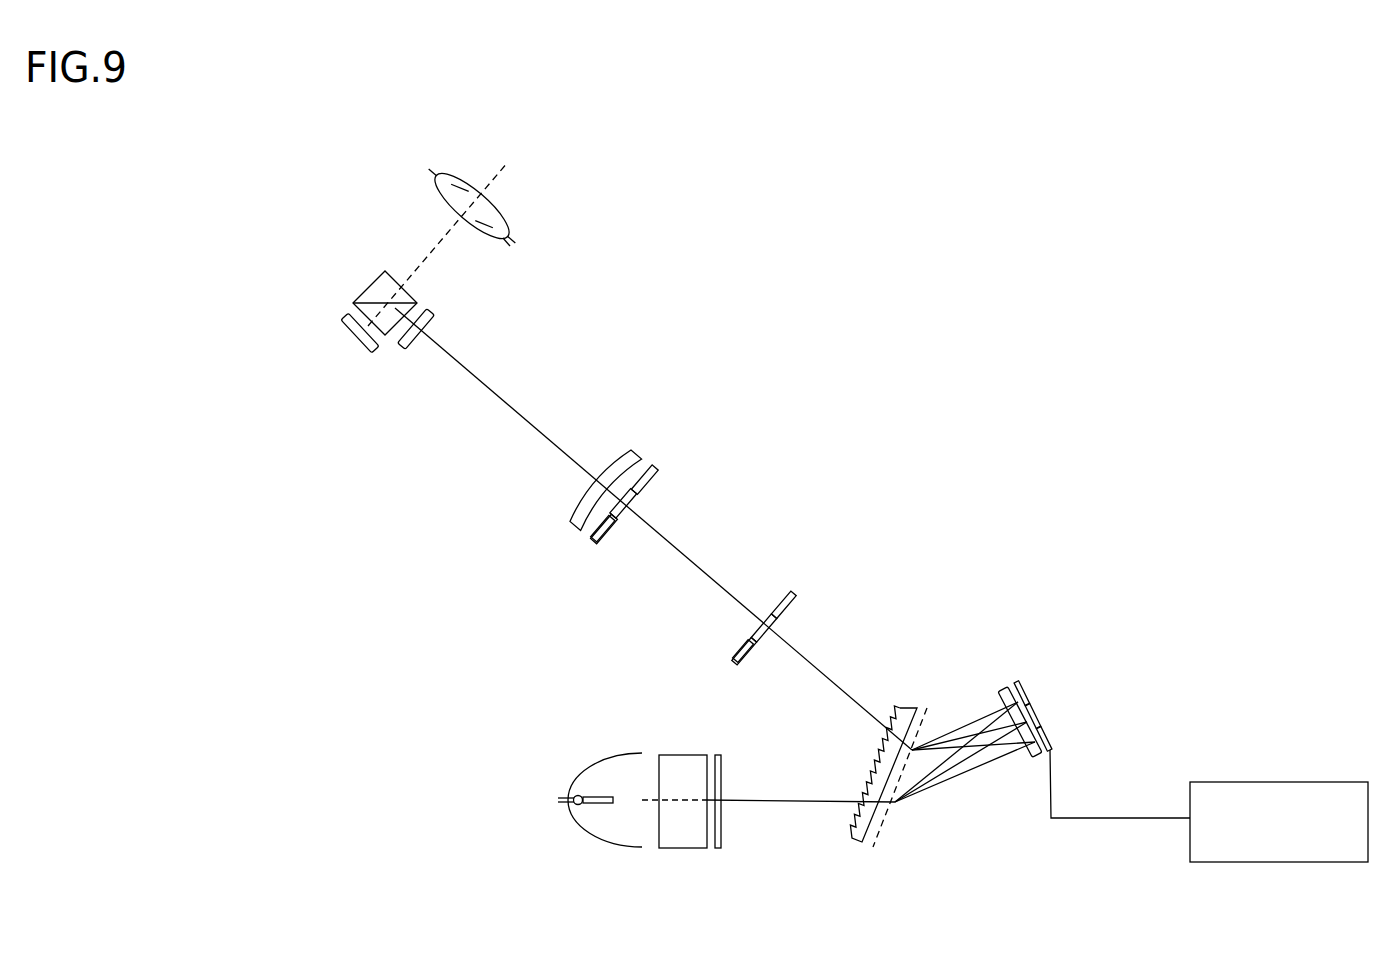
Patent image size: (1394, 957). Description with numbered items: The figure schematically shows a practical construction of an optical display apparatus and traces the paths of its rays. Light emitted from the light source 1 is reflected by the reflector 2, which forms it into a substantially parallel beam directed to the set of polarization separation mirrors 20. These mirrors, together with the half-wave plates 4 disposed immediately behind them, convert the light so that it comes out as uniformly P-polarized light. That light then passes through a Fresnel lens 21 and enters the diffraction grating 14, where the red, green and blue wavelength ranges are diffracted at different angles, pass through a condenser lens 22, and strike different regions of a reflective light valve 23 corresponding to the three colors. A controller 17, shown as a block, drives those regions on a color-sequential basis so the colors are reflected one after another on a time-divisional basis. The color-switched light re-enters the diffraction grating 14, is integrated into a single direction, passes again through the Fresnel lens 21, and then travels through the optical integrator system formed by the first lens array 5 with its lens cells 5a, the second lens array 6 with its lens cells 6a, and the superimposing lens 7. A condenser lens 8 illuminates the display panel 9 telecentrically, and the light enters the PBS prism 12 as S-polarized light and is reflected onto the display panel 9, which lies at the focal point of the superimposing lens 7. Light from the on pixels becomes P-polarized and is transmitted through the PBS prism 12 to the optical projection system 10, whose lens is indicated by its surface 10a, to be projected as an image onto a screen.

The light source 1 is at (575, 792).
The reflector 2 is at (606, 762).
The half-wave plates 4 is at (722, 838).
The first lens array 5 is at (796, 587).
The lens cells 5a is at (738, 656).
The second lens array 6 is at (660, 465).
The lens cells 6a is at (605, 532).
The superimposing lens 7 is at (628, 450).
The condenser lens 8 is at (433, 325).
The display panel 9 is at (365, 350).
The optical projection system 10 is at (495, 210).
The lens surface 10a is at (503, 240).
The PBS prism 12 is at (365, 295).
The diffraction grating 14 is at (883, 827).
The controller 17 is at (1233, 781).
The polarization separation mirrors 20 is at (681, 755).
The Fresnel lens 21 is at (912, 703).
The condenser lens 22 is at (1005, 688).
The reflective light valve 23 is at (1019, 683).